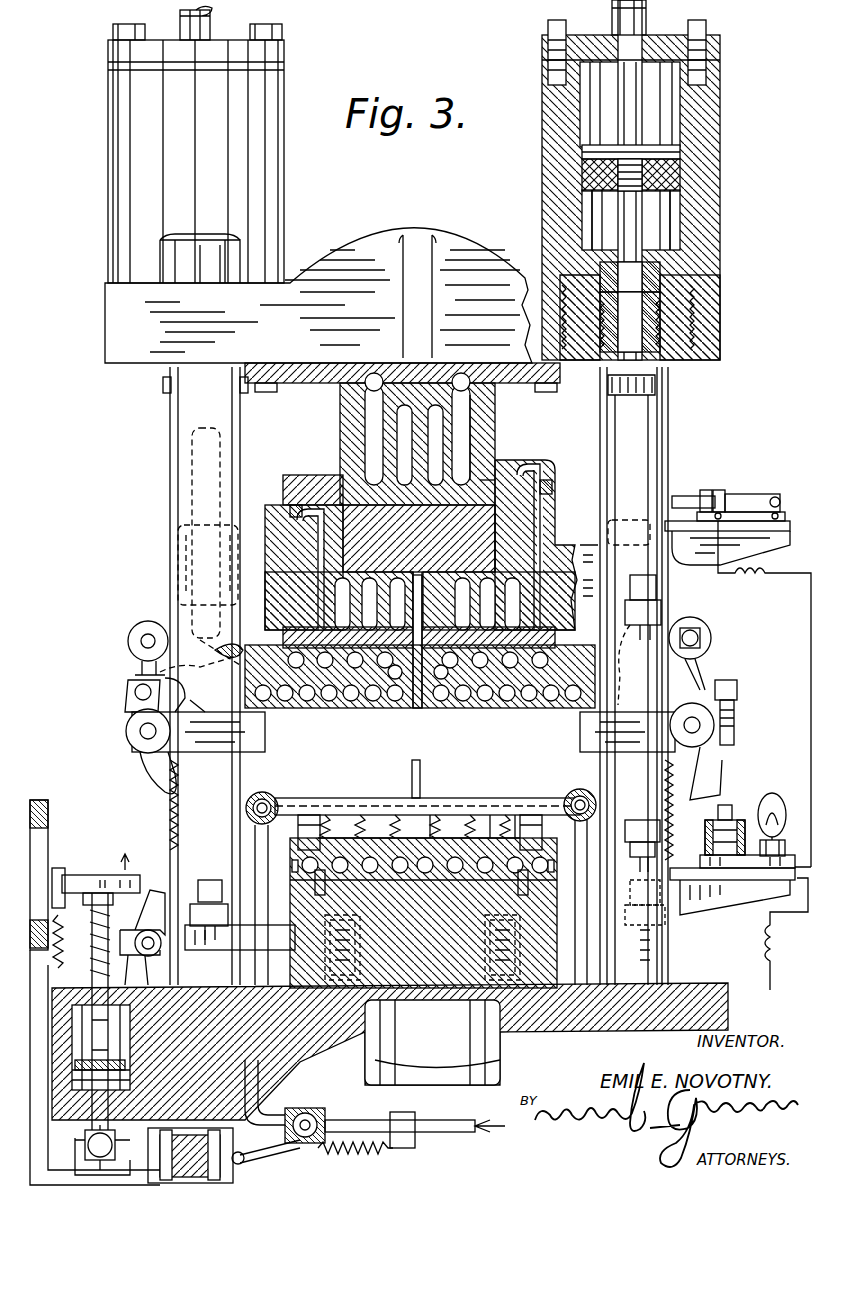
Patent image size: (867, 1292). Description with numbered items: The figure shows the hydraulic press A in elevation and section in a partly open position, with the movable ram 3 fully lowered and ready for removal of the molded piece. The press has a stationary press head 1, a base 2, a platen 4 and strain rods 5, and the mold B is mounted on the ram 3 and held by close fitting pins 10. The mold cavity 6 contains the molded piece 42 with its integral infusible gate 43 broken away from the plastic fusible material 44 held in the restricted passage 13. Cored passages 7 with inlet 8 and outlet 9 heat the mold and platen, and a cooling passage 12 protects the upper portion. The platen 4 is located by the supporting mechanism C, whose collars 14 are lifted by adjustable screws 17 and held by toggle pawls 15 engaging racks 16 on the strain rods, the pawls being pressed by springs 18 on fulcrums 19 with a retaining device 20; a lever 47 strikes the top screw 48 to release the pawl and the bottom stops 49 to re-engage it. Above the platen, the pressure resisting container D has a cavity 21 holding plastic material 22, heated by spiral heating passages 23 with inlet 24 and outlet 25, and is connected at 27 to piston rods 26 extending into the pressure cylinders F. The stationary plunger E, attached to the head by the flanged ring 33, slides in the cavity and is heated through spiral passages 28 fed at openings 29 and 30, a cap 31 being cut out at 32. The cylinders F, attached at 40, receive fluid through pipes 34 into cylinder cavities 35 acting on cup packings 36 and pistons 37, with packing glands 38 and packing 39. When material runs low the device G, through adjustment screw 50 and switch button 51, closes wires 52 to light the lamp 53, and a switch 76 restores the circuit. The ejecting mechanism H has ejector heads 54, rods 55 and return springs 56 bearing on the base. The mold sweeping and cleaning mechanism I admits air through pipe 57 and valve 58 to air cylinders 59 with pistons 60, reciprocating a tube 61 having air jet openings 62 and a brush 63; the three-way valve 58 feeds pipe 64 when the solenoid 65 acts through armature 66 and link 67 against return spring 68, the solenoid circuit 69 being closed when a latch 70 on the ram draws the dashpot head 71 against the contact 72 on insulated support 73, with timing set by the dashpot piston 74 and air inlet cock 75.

The press head 1 is at (462, 240).
The base 2 is at (580, 1030).
The movable ram 3 is at (490, 1055).
The platen 4 is at (568, 660).
The strain rods 5 is at (178, 410).
The mold cavity 6 is at (388, 830).
The cored passages 7 is at (450, 700).
The inlet 8 is at (292, 866).
The outlet 9 is at (552, 872).
The close fitting pins 10 is at (318, 892).
The cooling passage 12 is at (332, 668).
The restricted passage 13 is at (416, 708).
The collars 14 is at (262, 740).
The toggle pawls 15 is at (155, 762).
The racks 16 is at (672, 790).
The adjustable screws 17 is at (195, 878).
The springs 18 is at (130, 668).
The fulcrums 19 is at (136, 695).
The retaining device 20 is at (712, 632).
The cavity 21 is at (315, 478).
The plastic material 22 is at (500, 540).
The spiral heating passages 23 is at (318, 600).
The inlet 24 is at (552, 485).
The outlet 25 is at (282, 515).
The piston rods 26 is at (205, 478).
The connection 27 is at (178, 568).
The heating passages 28 is at (470, 405).
The opening 29 is at (463, 370).
The opening 30 is at (376, 372).
The cap 31 is at (500, 475).
The cut-out 32 is at (452, 505).
The flanged ring 33 is at (285, 395).
The pipes 34 is at (210, 20).
The cylinder cavities 35 is at (672, 220).
The cup packings 36 is at (680, 150).
The pistons 37 is at (682, 170).
The packing glands 38 is at (660, 305).
The packing 39 is at (660, 275).
The attachment 40 is at (722, 322).
The molded piece 42 is at (460, 815).
The integral infusible gate 43 is at (405, 756).
The plastic fusible material 44 is at (398, 580).
The lever 47 is at (650, 668).
The top screw 48 is at (662, 612).
The bottom stops 49 is at (660, 835).
The adjustment screw 50 is at (738, 742).
The switch button 51 is at (726, 812).
The wires 52 is at (797, 512).
The lamp 53 is at (774, 797).
The ejector heads 54 is at (315, 815).
The rods 55 is at (490, 940).
The return springs 56 is at (490, 958).
The pipe 57 is at (445, 1132).
The valve 58 is at (310, 1115).
The air cylinders 59 is at (262, 792).
The pistons 60 is at (255, 840).
The tube 61 is at (436, 800).
The air jet openings 62 is at (500, 800).
The brush 63 is at (525, 812).
The pipe 64 is at (262, 1070).
The solenoid 65 is at (212, 1150).
The armature 66 is at (242, 1163).
The link 67 is at (285, 1150).
The return spring 68 is at (350, 1148).
The solenoid circuit 69 is at (60, 1152).
The latch 70 is at (145, 925).
The dashpot head 71 is at (85, 878).
The contact 72 is at (60, 868).
The insulated support 73 is at (40, 800).
The dashpot piston 74 is at (75, 1072).
The air inlet cock 75 is at (118, 1135).
The switch 76 is at (730, 495).
The hydraulic press A is at (373, 233).
The mold B is at (548, 852).
The supporting mechanism C is at (130, 734).
The pressure resisting container D is at (556, 470).
The stationary plunger E is at (488, 430).
The pressure cylinders F is at (275, 163).
The signal device G is at (740, 868).
The ejecting mechanism H is at (522, 775).
The mold sweeping and cleaning mechanism I is at (135, 1042).